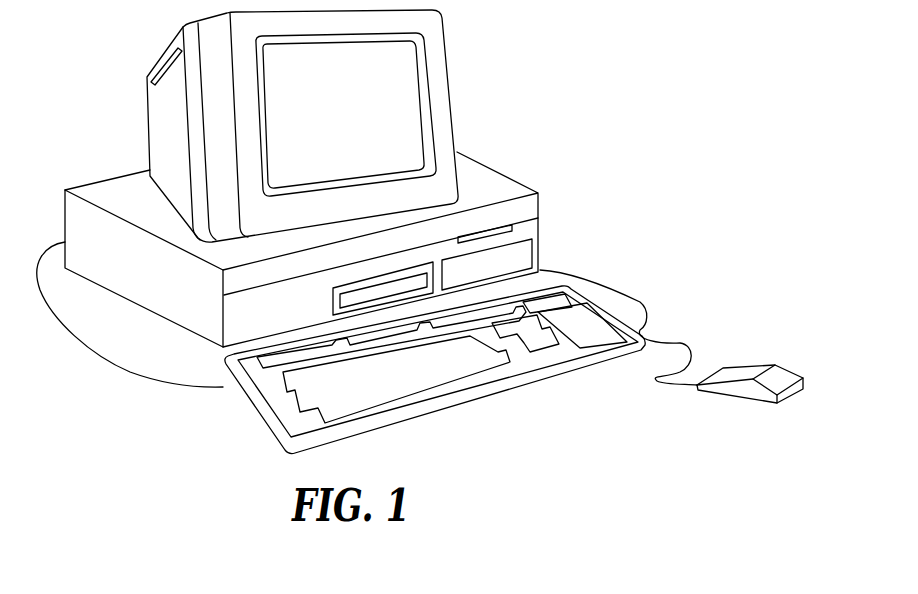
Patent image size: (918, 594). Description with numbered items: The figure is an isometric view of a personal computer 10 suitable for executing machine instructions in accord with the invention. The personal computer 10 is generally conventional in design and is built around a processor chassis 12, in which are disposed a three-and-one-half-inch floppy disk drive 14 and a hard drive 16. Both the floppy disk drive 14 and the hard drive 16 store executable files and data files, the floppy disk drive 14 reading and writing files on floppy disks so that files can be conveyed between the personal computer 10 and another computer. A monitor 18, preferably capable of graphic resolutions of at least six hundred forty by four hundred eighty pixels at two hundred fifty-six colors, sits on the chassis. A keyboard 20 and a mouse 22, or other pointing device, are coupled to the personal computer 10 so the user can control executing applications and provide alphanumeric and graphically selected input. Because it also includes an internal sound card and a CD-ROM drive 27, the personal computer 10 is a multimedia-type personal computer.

The personal computer 10 is at (436, 257).
The processor chassis 12 is at (520, 229).
The floppy disk drive 14 is at (490, 230).
The hard drive 16 is at (352, 249).
The monitor 18 is at (448, 72).
The keyboard 20 is at (527, 390).
The mouse 22 is at (780, 405).
The CD-ROM drive 27 is at (333, 299).